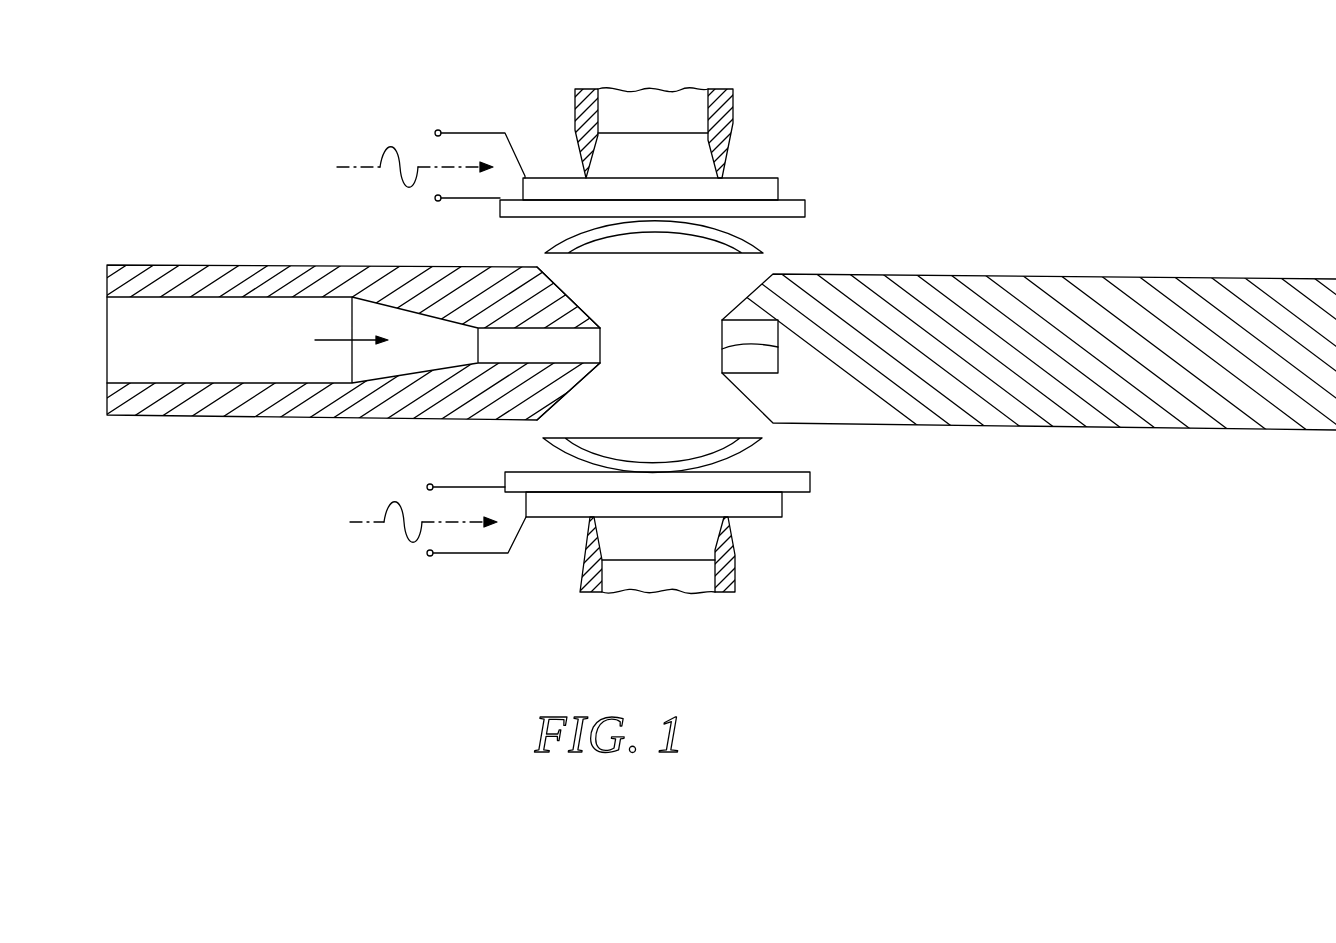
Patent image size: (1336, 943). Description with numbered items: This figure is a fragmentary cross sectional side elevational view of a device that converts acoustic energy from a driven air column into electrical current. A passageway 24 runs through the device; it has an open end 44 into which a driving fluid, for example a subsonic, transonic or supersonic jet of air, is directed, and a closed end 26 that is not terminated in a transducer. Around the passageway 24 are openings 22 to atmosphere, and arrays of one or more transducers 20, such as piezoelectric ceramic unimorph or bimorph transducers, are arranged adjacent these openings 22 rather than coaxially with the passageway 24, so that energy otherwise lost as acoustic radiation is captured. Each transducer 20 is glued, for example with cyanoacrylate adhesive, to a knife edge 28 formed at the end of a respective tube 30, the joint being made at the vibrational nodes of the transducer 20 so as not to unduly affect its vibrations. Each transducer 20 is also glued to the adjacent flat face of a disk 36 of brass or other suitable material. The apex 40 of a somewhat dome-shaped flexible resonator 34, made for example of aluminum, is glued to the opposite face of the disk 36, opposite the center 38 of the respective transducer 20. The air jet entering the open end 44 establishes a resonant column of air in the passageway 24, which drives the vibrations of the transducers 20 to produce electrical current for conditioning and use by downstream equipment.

The transducer 20 is at (778, 188).
The opening 22 is at (535, 267).
The passageway 24 is at (313, 383).
The closed end 26 is at (722, 349).
The knife edge 28 is at (588, 178).
The tube 30 is at (652, 103).
The flexible resonator 34 is at (633, 232).
The disk 36 is at (806, 215).
The center 38 is at (652, 215).
The apex 40 is at (657, 217).
The open end 44 is at (98, 399).